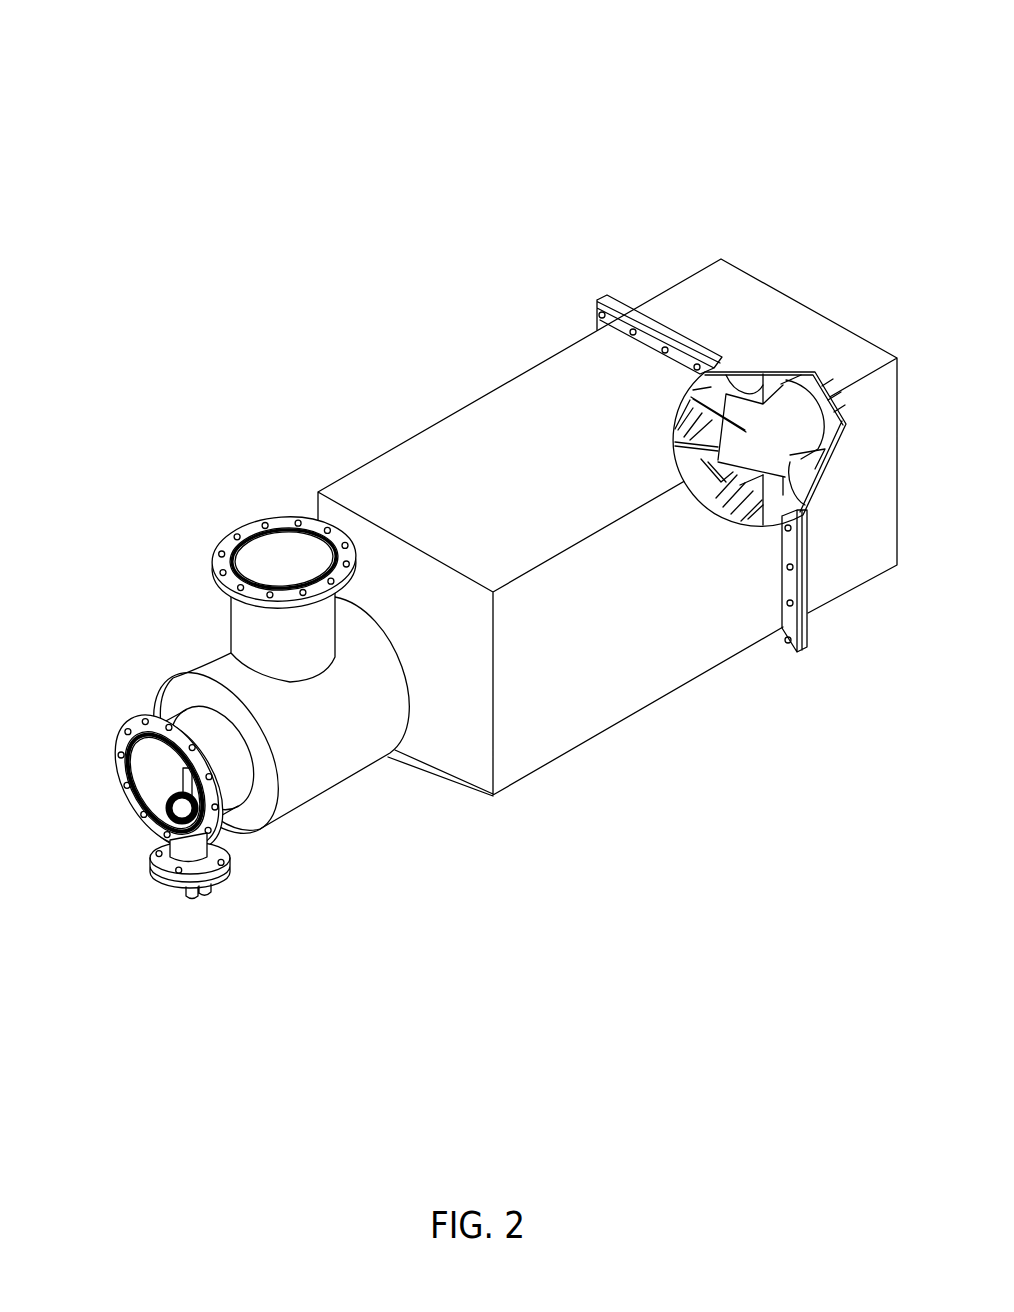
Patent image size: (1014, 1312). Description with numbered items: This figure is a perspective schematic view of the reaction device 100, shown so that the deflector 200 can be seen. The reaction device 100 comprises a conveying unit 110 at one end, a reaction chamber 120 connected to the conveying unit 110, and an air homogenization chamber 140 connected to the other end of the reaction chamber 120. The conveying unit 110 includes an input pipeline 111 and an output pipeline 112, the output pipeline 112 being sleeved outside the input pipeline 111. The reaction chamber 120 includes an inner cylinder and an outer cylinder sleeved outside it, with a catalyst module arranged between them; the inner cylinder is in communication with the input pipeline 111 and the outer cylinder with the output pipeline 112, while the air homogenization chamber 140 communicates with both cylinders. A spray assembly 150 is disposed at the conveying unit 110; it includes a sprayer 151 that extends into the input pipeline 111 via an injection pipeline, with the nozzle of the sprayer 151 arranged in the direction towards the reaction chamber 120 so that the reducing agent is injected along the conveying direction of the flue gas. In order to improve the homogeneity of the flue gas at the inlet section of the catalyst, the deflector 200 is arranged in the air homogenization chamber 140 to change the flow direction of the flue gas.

The reaction device 100 is at (78, 49).
The conveying unit 110 is at (367, 818).
The input pipeline 111 is at (183, 730).
The output pipeline 112 is at (232, 667).
The reaction chamber 120 is at (605, 757).
The air homogenization chamber 140 is at (712, 275).
The spray assembly 150 is at (230, 902).
The sprayer 151 is at (192, 781).
The deflector 200 is at (781, 504).